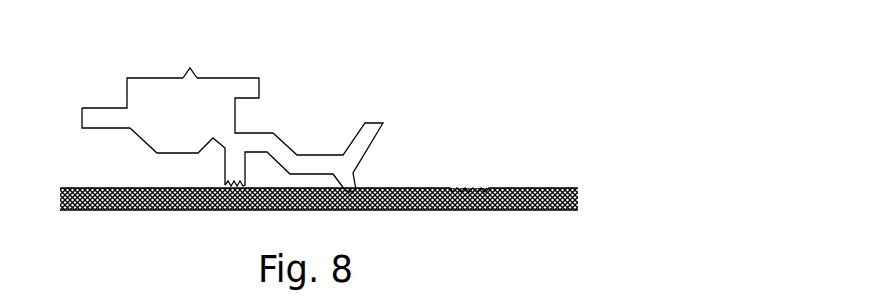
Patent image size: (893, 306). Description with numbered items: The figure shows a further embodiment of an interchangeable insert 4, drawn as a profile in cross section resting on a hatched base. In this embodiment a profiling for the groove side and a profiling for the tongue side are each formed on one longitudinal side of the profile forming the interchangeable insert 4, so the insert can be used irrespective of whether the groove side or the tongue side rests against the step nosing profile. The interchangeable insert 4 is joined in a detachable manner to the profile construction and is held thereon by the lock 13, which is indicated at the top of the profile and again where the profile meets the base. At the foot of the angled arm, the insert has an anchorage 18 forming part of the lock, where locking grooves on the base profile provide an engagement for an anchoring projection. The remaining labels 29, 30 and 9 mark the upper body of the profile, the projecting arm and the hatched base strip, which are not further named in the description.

The profile body 29 is at (80, 79).
The lock 13 is at (195, 60).
The interchangeable insert 4 is at (124, 142).
The arm 30 is at (324, 128).
The anchorage 18 is at (354, 199).
The seal strip 9 is at (436, 184).